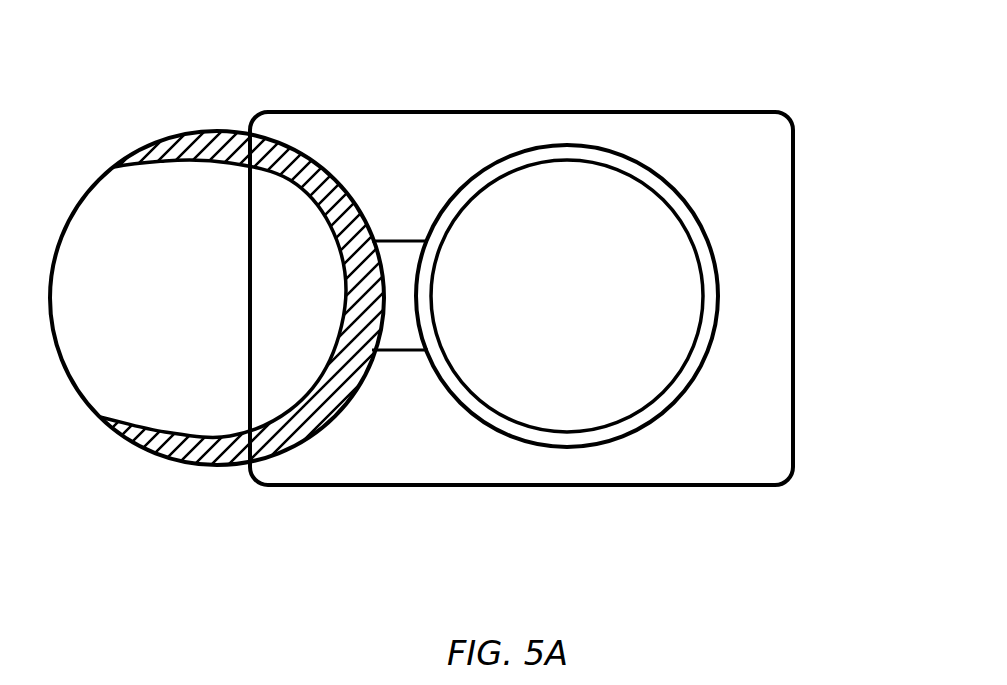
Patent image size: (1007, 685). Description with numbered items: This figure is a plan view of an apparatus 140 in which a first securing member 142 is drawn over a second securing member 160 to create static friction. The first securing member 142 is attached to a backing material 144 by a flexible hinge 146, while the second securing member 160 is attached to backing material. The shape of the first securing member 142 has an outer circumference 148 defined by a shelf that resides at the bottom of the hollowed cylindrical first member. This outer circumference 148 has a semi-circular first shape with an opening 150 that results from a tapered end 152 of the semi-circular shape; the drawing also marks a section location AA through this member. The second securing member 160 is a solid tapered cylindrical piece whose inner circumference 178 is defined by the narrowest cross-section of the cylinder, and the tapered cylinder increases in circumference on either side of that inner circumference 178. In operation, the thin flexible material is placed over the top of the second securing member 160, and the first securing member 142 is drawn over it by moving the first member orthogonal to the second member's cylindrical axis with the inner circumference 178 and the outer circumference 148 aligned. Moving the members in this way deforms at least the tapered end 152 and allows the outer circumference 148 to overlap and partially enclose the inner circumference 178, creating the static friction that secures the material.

The apparatus 140 is at (850, 362).
The first securing member 142 is at (197, 472).
The backing material 144 is at (733, 486).
The flexible hinge 146 is at (397, 348).
The outer circumference 148 is at (206, 437).
The opening 150 is at (82, 395).
The tapered end 152 is at (130, 178).
The second securing member 160 is at (684, 178).
The inner circumference 178 is at (693, 352).
The section line AA is at (307, 180).